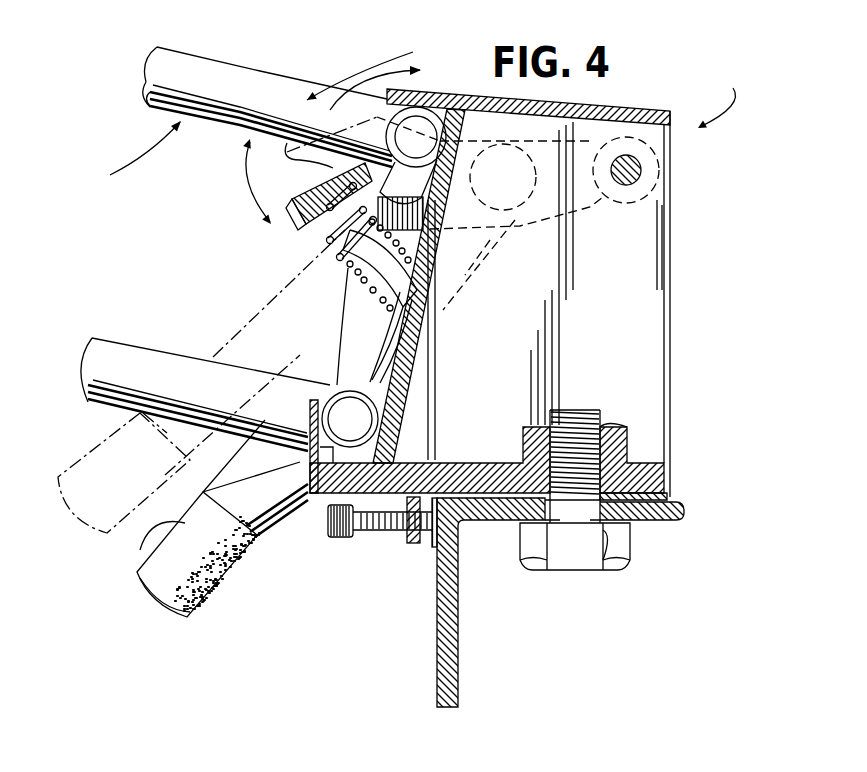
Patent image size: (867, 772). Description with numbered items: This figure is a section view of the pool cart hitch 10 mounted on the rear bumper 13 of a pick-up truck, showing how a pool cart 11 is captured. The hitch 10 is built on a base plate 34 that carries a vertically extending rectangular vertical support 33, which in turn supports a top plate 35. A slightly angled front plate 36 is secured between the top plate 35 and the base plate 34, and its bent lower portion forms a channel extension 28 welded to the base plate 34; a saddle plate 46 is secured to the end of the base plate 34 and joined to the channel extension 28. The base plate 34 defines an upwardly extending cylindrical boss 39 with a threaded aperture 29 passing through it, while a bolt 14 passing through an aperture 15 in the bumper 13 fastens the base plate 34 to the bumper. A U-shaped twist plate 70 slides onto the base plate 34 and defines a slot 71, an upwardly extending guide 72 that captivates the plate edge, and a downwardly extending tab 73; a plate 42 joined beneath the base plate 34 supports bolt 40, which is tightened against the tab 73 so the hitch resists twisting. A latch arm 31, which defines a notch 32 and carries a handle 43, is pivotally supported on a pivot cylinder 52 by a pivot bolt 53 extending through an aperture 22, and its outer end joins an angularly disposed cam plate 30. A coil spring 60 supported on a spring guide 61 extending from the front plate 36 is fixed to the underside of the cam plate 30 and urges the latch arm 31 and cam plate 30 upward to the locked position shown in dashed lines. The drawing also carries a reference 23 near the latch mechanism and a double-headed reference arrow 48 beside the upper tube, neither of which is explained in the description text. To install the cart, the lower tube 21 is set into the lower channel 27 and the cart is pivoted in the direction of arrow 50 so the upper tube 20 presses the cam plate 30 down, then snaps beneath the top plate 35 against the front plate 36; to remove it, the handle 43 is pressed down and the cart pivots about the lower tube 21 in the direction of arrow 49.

The pool cart hitch 10 is at (716, 98).
The pool cart 11 is at (130, 153).
The rear bumper 13 is at (463, 633).
The bolt 14 is at (550, 550).
The aperture 15 is at (565, 522).
The upper tube 20 is at (280, 83).
The lower tube 21 is at (112, 347).
The aperture 22 is at (637, 168).
The pawl link 23 is at (350, 309).
The lower channel 27 is at (350, 420).
The channel extension 28 is at (320, 500).
The threaded aperture 29 is at (600, 438).
The cam plate 30 is at (300, 203).
The latch arm 31 is at (330, 240).
The notch 32 is at (333, 170).
The vertical support 33 is at (665, 250).
The base plate 34 is at (668, 482).
The top plate 35 is at (603, 103).
The front plate 36 is at (437, 257).
The cylindrical boss 39 is at (620, 430).
The bolt 40 is at (365, 537).
The plate 42 is at (407, 543).
The handle 43 is at (138, 533).
The saddle plate 46 is at (302, 405).
The pivoting motion arrow 48 is at (252, 193).
The arrow 49 is at (378, 56).
The arrow 50 is at (428, 76).
The pivot cylinder 52 is at (627, 203).
The pivot bolt 53 is at (632, 183).
The coil spring 60 is at (405, 337).
The spring guide 61 is at (433, 290).
The twist plate 70 is at (668, 497).
The slot 71 is at (510, 523).
The guide 72 is at (672, 440).
The tab 73 is at (432, 546).